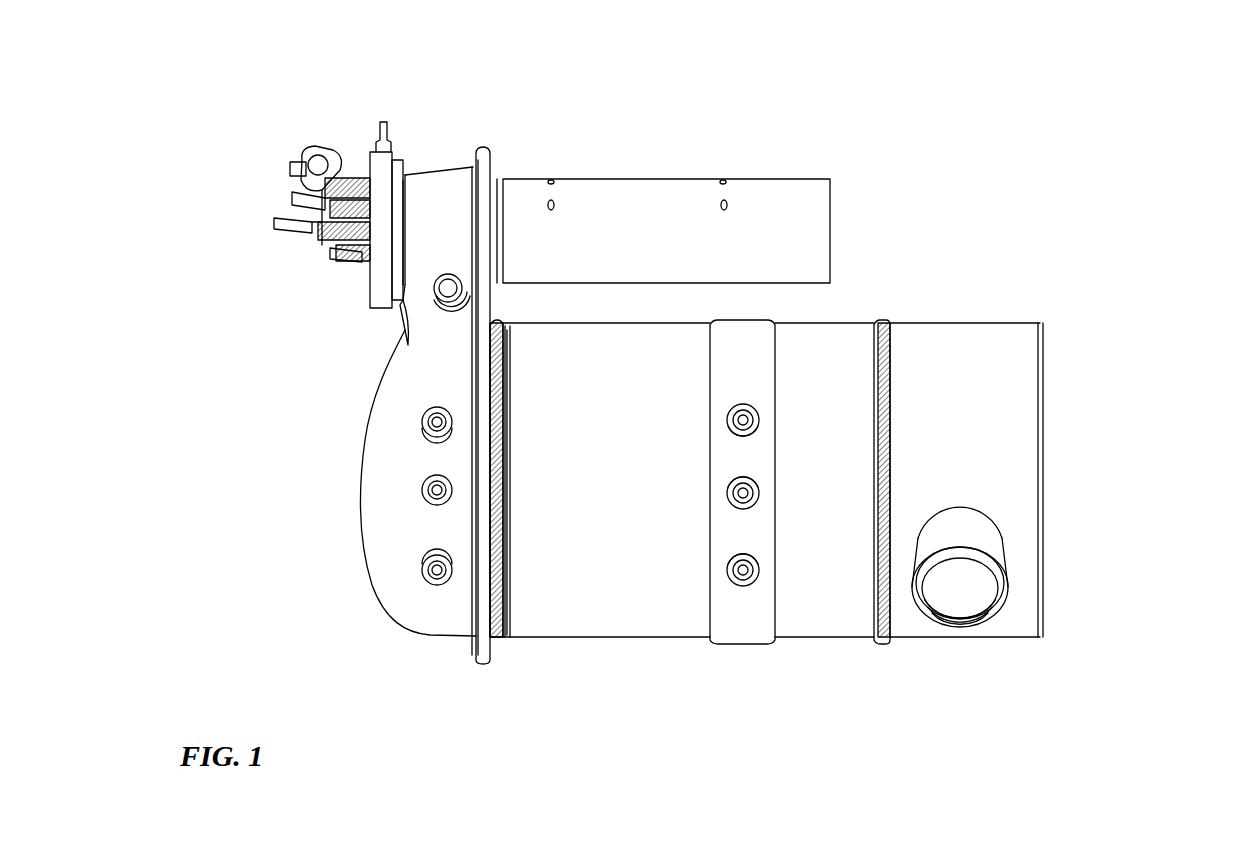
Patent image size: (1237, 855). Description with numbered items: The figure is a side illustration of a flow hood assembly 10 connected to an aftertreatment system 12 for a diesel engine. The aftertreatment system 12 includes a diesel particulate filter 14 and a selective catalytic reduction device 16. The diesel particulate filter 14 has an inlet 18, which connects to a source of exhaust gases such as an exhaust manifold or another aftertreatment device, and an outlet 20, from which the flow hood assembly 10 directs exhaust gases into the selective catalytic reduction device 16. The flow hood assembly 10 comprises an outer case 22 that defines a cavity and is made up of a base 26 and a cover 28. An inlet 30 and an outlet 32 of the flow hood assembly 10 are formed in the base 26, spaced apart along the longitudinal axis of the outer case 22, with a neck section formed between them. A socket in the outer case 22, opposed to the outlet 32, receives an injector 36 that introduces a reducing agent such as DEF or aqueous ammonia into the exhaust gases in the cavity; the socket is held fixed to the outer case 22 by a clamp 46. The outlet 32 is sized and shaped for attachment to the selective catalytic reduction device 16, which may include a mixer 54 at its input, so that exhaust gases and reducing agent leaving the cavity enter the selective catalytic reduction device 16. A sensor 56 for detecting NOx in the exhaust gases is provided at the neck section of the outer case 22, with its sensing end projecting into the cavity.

The flow hood assembly 10 is at (265, 142).
The aftertreatment system 12 is at (1097, 160).
The diesel particulate filter 14 is at (641, 496).
The selective catalytic reduction device 16 is at (705, 178).
The inlet 18 is at (983, 622).
The outlet 20 is at (510, 572).
The outer case 22 is at (360, 482).
The base 26 is at (495, 160).
The cover 28 is at (397, 413).
The inlet 30 is at (507, 633).
The outlet 32 is at (498, 200).
The injector 36 is at (372, 233).
The clamp 46 is at (383, 172).
The mixer 54 is at (641, 249).
The sensor 56 is at (445, 287).